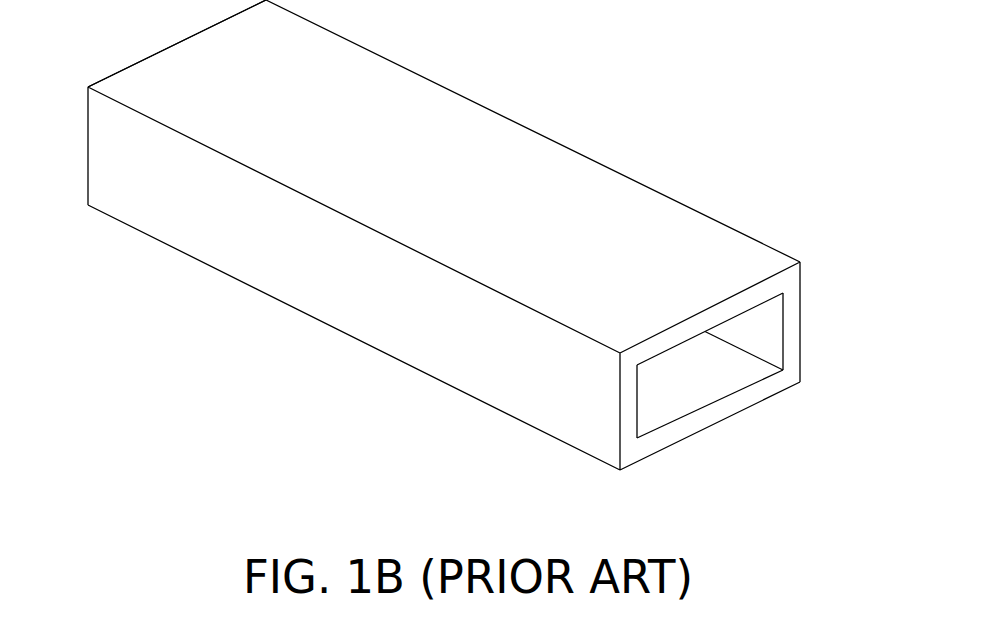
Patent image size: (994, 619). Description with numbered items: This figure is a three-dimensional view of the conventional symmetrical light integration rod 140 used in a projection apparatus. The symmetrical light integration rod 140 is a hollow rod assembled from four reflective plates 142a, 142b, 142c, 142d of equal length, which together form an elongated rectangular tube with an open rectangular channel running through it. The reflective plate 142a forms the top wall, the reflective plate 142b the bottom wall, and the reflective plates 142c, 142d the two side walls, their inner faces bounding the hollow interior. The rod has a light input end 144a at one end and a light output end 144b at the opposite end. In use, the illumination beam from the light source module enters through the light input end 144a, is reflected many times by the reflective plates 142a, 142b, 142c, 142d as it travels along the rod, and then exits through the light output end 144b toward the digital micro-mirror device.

The symmetrical light integration rod 140 is at (865, 513).
The reflective plate 142a is at (736, 305).
The reflective plate 142b is at (745, 398).
The reflective plate 142c is at (790, 313).
The reflective plate 142d is at (630, 408).
The light input end 144a is at (182, 40).
The light output end 144b is at (763, 334).